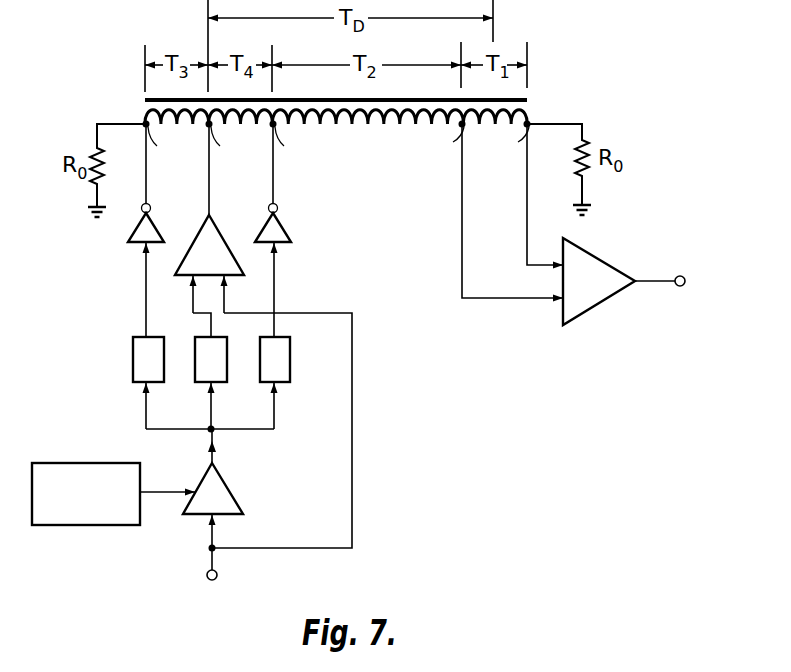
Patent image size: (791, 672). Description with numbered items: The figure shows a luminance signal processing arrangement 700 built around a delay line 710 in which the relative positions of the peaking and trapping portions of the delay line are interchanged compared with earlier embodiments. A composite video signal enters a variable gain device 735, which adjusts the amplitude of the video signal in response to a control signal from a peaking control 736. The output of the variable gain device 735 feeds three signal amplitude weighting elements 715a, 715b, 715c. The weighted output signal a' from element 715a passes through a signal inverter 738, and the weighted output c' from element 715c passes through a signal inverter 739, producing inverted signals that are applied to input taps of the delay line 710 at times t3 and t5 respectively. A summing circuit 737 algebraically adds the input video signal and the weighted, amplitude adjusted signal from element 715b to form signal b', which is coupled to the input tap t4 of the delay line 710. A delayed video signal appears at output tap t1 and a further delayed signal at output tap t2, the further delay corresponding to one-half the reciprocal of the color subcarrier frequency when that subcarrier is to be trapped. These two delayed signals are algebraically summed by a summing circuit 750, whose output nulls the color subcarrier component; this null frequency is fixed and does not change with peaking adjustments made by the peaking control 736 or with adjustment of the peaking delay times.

The luminance signal processing arrangement 700 is at (471, 418).
The delay line 710 is at (372, 166).
The signal amplitude weighting element 715a is at (133, 378).
The signal amplitude weighting element 715b is at (227, 364).
The signal amplitude weighting element 715c is at (290, 364).
The variable gain device 735 is at (227, 487).
The peaking control 736 is at (78, 526).
The summing circuit 737 is at (231, 252).
The signal inverter 738 is at (133, 227).
The signal inverter 739 is at (284, 231).
The summing circuit 750 is at (600, 303).